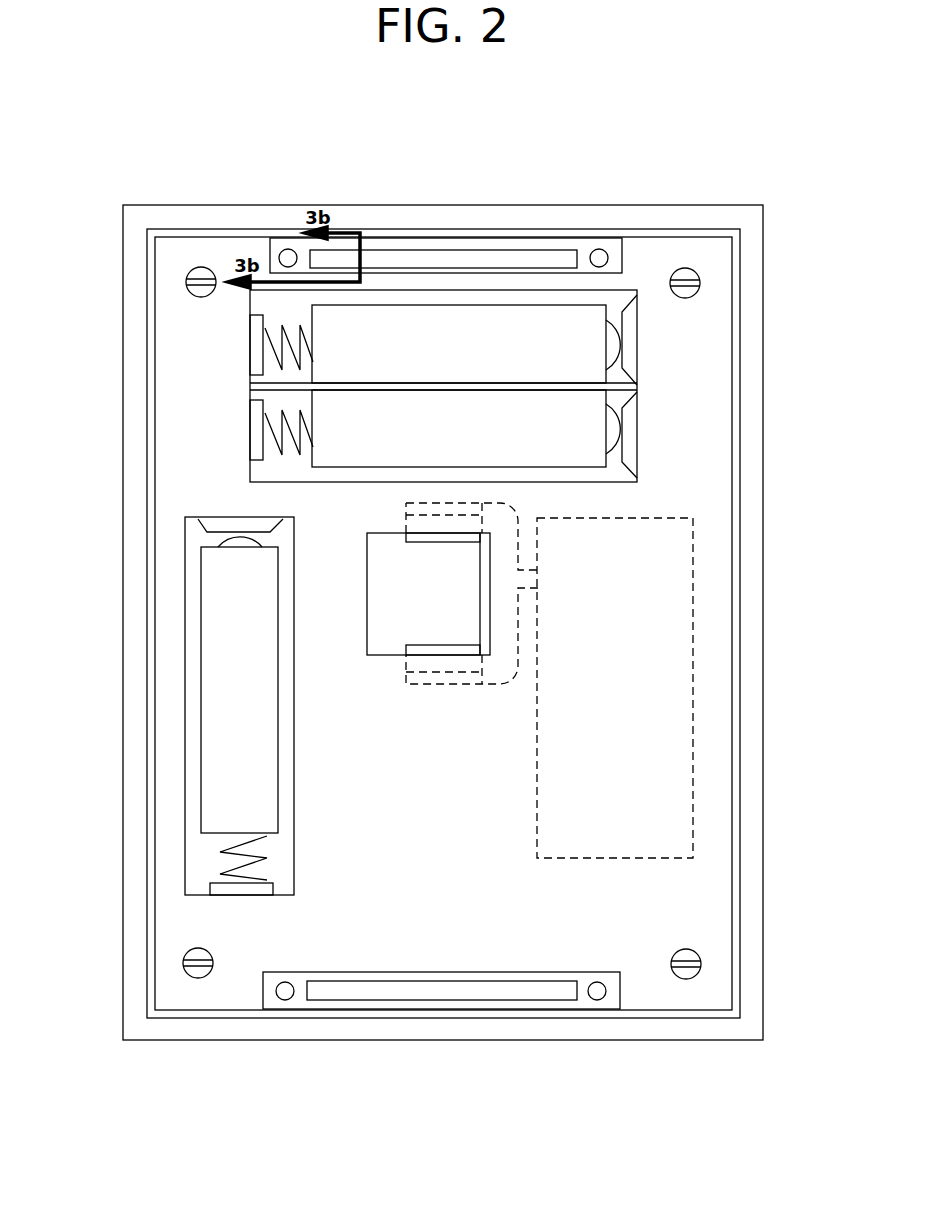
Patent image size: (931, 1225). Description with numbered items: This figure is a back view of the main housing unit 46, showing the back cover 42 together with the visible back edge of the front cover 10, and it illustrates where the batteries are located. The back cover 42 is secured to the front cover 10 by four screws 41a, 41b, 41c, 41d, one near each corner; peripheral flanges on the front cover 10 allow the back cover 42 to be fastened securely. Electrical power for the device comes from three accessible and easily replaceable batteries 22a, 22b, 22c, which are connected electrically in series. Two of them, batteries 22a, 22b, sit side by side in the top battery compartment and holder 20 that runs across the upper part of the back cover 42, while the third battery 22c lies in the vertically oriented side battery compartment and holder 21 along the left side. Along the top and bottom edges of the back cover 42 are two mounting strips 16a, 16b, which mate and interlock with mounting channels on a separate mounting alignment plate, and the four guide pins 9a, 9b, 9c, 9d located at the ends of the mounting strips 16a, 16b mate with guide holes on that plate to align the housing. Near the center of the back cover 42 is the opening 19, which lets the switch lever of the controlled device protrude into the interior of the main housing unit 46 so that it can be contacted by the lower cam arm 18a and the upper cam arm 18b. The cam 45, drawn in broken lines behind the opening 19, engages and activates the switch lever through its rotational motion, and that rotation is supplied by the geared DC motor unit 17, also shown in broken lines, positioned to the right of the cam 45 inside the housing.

The front cover 10 is at (122, 880).
The main housing unit 46 is at (775, 499).
The back cover 42 is at (182, 407).
The mounting strip 16a is at (512, 249).
The mounting strip 16b is at (542, 1001).
The guide pin 9a is at (293, 249).
The guide pin 9b is at (600, 249).
The guide pin 9c is at (292, 996).
The guide pin 9d is at (603, 998).
The screw 41a is at (207, 267).
The screw 41b is at (700, 281).
The screw 41c is at (185, 972).
The screw 41d is at (700, 963).
The top battery compartment and holder 20 is at (637, 290).
The battery 22a is at (590, 345).
The battery 22b is at (590, 430).
The side battery compartment and holder 21 is at (193, 517).
The battery 22c is at (210, 635).
The opening 19 is at (367, 568).
The lower cam arm 18a is at (443, 643).
The upper cam arm 18b is at (433, 542).
The cam 45 is at (497, 685).
The geared DC motor unit 17 is at (675, 762).